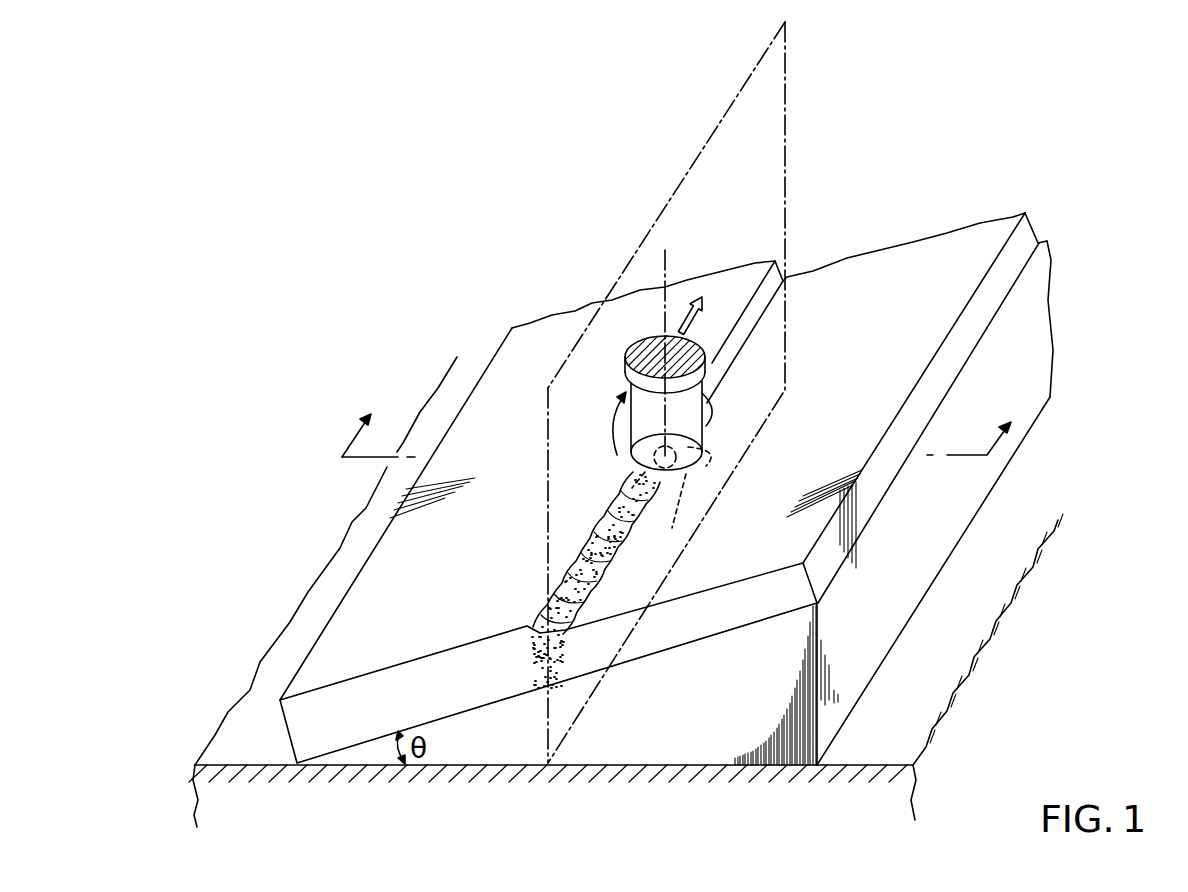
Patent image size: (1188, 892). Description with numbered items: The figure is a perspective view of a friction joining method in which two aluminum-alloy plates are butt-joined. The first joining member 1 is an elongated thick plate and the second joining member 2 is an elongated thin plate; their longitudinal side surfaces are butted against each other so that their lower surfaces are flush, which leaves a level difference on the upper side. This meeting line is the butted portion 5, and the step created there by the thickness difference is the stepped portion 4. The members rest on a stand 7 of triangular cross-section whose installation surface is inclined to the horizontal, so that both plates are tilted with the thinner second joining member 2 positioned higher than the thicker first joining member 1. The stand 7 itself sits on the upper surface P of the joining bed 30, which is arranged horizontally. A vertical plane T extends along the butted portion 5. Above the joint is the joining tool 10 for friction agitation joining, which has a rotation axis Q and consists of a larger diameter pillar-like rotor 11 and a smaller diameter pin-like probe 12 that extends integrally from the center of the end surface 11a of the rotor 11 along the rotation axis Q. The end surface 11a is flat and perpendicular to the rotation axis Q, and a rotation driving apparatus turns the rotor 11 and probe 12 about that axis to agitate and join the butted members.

The first joining member 1 is at (425, 570).
The second joining member 2 is at (826, 437).
The stepped portion 4 is at (755, 296).
The butted portion 5 is at (729, 357).
The stand 7 is at (672, 720).
The joining tool 10 is at (623, 363).
The rotor 11 is at (630, 438).
The end surface of the rotor 11a is at (756, 436).
The probe 12 is at (610, 580).
The joining bed 30 is at (861, 789).
The upper surface of the joining bed P is at (890, 735).
The rotation axis Q is at (668, 265).
The vertical plane T is at (768, 80).